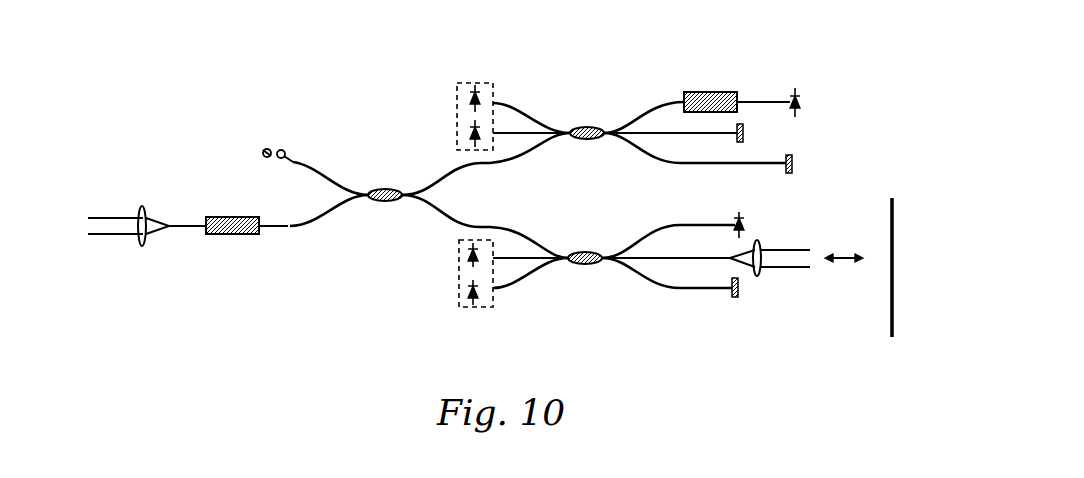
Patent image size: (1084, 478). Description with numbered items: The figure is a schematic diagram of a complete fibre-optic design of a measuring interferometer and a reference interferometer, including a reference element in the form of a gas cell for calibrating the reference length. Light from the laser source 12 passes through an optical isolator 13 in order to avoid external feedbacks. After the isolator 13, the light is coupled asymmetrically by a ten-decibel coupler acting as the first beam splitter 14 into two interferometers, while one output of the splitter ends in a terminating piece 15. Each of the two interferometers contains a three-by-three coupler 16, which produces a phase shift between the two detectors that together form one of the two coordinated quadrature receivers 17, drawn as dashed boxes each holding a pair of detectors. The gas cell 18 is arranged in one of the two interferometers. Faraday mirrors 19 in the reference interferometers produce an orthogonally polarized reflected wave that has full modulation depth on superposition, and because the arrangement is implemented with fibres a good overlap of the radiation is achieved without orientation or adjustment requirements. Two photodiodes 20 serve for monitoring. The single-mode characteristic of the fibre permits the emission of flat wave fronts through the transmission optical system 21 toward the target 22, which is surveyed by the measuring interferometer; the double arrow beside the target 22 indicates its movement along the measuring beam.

The laser source 12 is at (115, 228).
The optical isolator 13 is at (240, 228).
The first beam splitter 14 is at (380, 188).
The terminating piece 15 is at (262, 150).
The 3×3 coupler 16 is at (587, 135).
The quadrature receiver 17 is at (457, 102).
The gas cell 18 is at (715, 103).
The Faraday mirror 19 is at (744, 136).
The photodiode 20 is at (798, 88).
The transmission optical system 21 is at (757, 273).
The target 22 is at (890, 305).